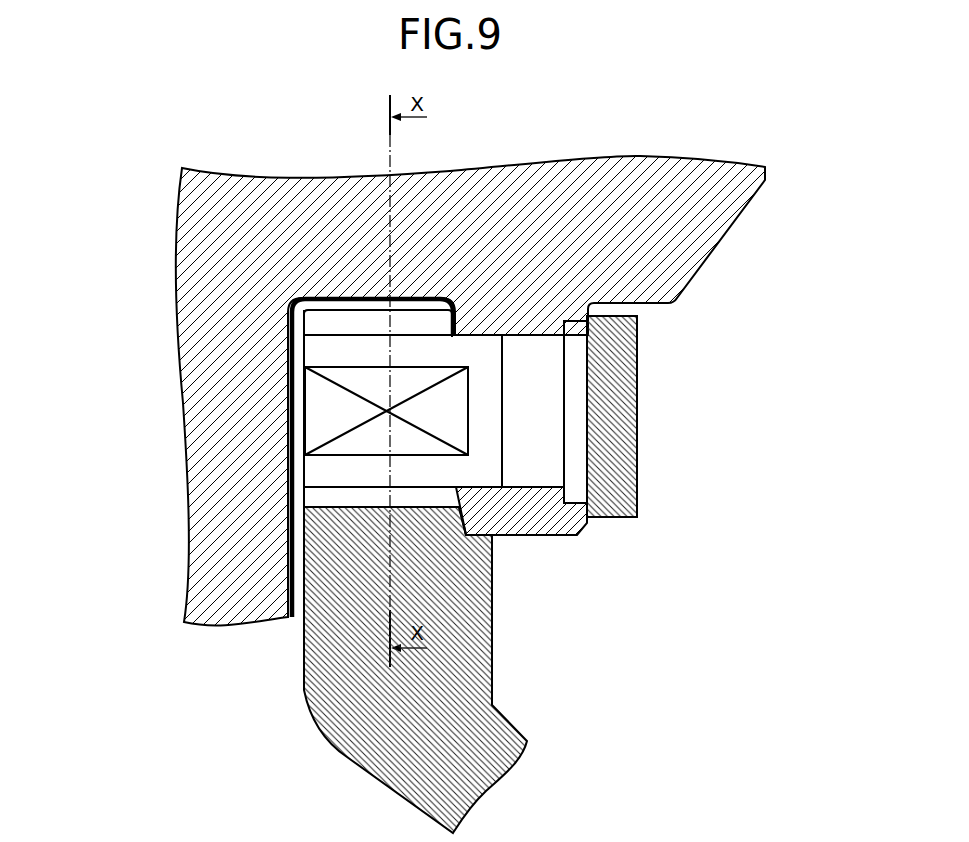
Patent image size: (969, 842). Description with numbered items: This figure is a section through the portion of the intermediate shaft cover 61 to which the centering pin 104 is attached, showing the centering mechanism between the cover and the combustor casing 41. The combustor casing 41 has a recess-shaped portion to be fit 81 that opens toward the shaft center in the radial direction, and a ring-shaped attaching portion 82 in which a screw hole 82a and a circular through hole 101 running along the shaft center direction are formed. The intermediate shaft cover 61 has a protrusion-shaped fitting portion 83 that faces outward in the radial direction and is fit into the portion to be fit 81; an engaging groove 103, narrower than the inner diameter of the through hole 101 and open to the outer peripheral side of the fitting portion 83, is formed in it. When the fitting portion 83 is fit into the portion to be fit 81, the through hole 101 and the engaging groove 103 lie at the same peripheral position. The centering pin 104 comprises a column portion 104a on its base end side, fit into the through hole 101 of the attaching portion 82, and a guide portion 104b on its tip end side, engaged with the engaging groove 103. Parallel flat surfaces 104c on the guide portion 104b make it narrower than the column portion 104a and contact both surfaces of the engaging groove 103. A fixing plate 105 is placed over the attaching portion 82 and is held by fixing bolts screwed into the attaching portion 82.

The combustor casing 41 is at (746, 224).
The portion to be fit 81 is at (328, 297).
The engaging groove 103 is at (360, 323).
The centering pin 104 is at (475, 329).
The through hole 101 is at (519, 338).
The column portion 104a is at (537, 382).
The fixing plate 105 is at (649, 424).
The flat surfaces 104c is at (325, 417).
The guide portion 104b is at (367, 480).
The attaching portion 82 is at (558, 526).
The screw hole 82a is at (483, 528).
The intermediate shaft cover 61 is at (310, 729).
The fitting portion 83 is at (327, 528).